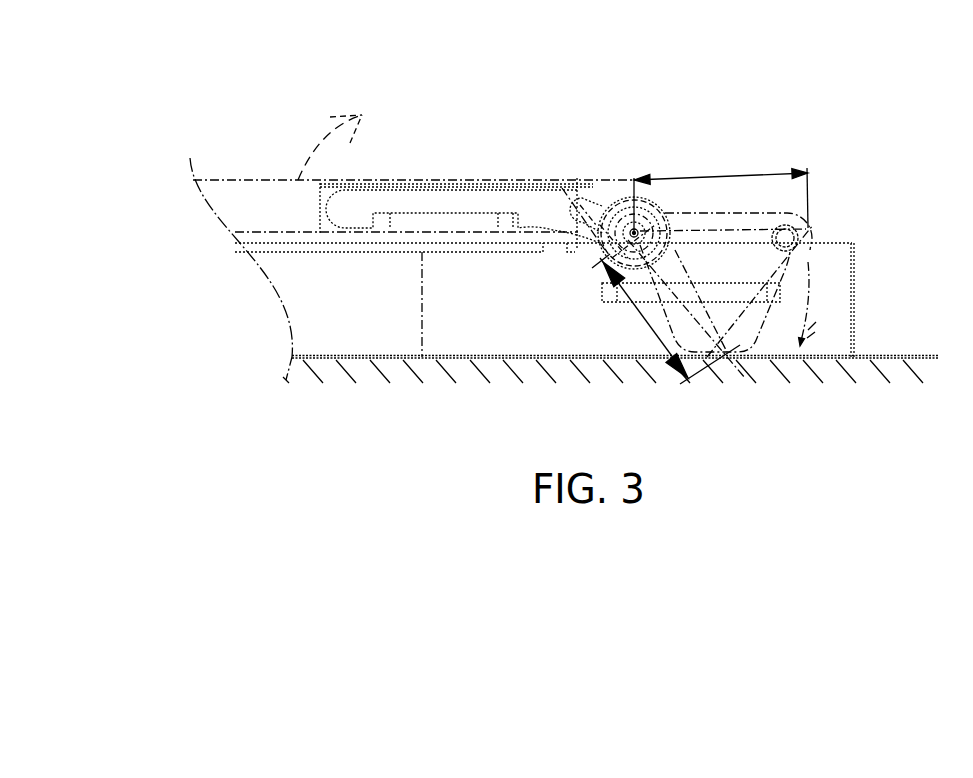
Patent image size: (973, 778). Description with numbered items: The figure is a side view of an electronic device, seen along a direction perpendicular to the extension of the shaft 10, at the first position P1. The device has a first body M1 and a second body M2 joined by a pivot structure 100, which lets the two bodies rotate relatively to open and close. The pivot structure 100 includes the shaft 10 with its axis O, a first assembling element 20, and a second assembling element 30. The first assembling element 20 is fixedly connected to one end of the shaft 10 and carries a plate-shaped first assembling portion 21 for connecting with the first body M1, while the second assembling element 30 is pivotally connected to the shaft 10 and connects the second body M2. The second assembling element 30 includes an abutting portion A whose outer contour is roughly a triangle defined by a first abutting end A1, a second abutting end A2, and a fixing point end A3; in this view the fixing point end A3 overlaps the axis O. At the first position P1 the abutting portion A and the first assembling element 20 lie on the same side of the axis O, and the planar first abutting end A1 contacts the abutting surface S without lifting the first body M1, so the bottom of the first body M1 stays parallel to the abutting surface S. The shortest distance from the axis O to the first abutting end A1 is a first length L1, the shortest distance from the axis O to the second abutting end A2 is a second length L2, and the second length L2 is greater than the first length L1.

The pivot structure 100 is at (822, 190).
The shaft 10 is at (620, 225).
The first assembling element 20 is at (603, 305).
The first assembling portion 21 is at (776, 258).
The second assembling element 30 is at (320, 213).
The abutting portion A is at (784, 266).
The first abutting end A1 is at (733, 358).
The second abutting end A2 is at (808, 228).
The fixing point end A3 is at (584, 204).
The axis O is at (633, 231).
The first length L1 is at (643, 320).
The second length L2 is at (718, 178).
The first body M1 is at (304, 360).
The second body M2 is at (238, 180).
The first position P1 is at (118, 68).
The abutting surface S is at (930, 356).